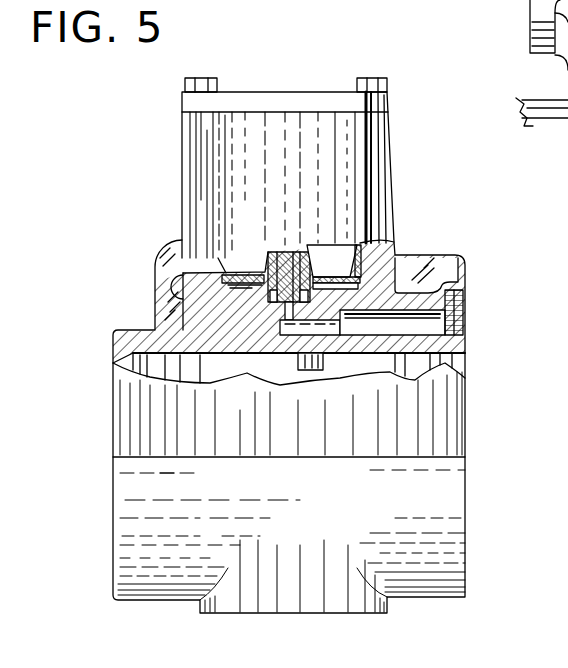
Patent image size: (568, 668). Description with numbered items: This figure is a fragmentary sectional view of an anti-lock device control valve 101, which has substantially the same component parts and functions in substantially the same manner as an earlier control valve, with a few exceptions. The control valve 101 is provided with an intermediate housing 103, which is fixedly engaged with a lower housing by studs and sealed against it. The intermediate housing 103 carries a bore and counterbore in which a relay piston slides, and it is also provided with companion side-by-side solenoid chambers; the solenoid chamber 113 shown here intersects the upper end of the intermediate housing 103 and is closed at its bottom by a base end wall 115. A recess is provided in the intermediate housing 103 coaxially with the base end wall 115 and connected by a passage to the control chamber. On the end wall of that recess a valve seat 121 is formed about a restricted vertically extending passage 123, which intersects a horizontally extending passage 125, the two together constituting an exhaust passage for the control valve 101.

The anti-lock device control valve 101 is at (474, 160).
The intermediate housing 103 is at (380, 258).
The solenoid chamber 113 is at (222, 272).
The base end wall 115 is at (215, 312).
The valve seat 121 is at (247, 348).
The restricted vertically extending passage 123 is at (318, 328).
The horizontally extending passage 125 is at (418, 363).